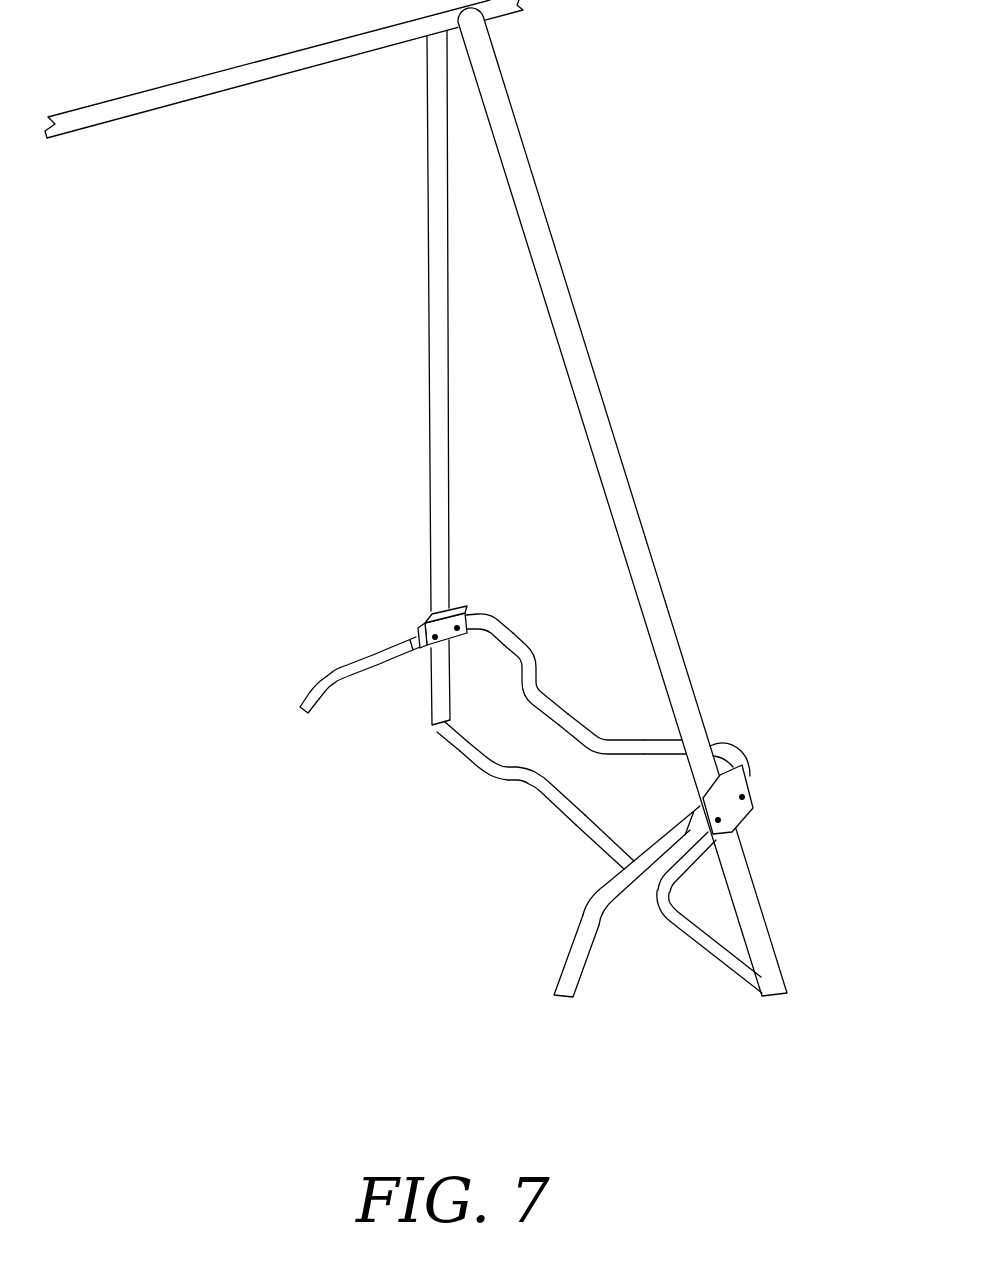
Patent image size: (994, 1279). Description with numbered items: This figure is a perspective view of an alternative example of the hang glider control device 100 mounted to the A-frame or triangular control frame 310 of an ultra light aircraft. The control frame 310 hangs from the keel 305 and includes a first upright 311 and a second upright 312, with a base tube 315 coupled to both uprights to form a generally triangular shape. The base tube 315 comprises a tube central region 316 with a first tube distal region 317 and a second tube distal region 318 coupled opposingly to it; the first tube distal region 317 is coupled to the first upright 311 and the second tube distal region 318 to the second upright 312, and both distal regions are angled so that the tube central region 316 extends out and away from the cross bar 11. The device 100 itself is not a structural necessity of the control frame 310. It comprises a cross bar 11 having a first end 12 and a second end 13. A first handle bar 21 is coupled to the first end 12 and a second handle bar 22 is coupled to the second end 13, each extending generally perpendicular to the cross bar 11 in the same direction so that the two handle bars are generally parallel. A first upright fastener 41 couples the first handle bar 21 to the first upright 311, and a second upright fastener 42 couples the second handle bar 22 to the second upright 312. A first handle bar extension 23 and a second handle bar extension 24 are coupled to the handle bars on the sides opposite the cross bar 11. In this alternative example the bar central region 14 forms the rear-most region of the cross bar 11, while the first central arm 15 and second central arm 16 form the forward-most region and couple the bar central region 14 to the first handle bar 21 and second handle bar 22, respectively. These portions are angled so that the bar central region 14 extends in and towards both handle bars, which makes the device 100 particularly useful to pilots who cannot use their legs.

The hang glider control device 100 is at (526, 733).
The keel 305 is at (197, 88).
The control frame 310 is at (567, 504).
The first upright 311 is at (598, 432).
The second upright 312 is at (438, 402).
The base tube 315 is at (542, 795).
The tube central region 316 is at (567, 812).
The first tube distal region 317 is at (707, 947).
The second tube distal region 318 is at (470, 752).
The cross bar 11 is at (616, 656).
The first end 12 is at (742, 744).
The second end 13 is at (617, 656).
The bar central region 14 is at (560, 720).
The first central arm 15 is at (672, 750).
The second central arm 16 is at (527, 650).
The first handle bar 21 is at (600, 901).
The second handle bar 22 is at (331, 659).
The first handle bar extension 23 is at (572, 958).
The second handle bar extension 24 is at (310, 697).
The first upright fastener 41 is at (730, 807).
The second upright fastener 42 is at (420, 622).